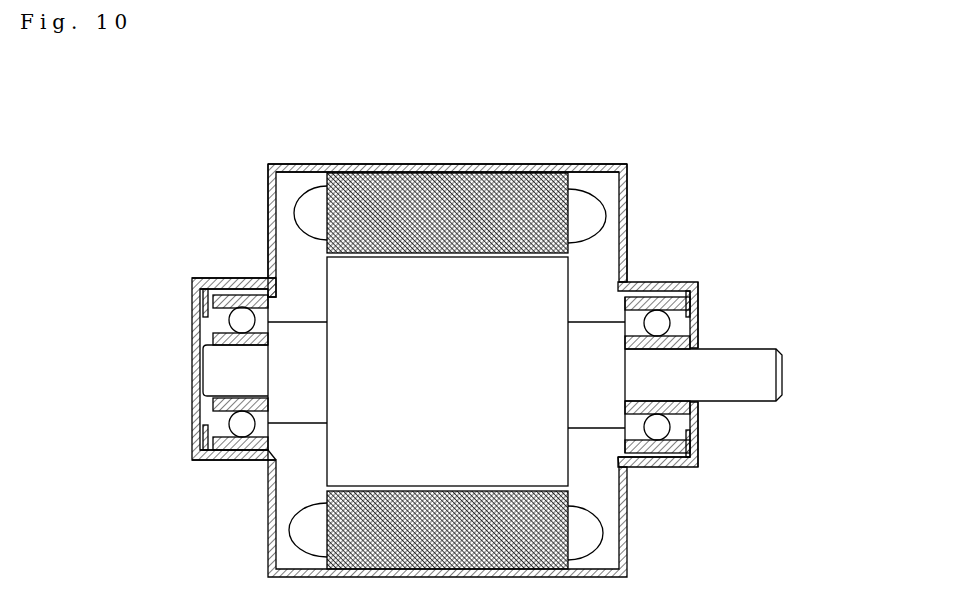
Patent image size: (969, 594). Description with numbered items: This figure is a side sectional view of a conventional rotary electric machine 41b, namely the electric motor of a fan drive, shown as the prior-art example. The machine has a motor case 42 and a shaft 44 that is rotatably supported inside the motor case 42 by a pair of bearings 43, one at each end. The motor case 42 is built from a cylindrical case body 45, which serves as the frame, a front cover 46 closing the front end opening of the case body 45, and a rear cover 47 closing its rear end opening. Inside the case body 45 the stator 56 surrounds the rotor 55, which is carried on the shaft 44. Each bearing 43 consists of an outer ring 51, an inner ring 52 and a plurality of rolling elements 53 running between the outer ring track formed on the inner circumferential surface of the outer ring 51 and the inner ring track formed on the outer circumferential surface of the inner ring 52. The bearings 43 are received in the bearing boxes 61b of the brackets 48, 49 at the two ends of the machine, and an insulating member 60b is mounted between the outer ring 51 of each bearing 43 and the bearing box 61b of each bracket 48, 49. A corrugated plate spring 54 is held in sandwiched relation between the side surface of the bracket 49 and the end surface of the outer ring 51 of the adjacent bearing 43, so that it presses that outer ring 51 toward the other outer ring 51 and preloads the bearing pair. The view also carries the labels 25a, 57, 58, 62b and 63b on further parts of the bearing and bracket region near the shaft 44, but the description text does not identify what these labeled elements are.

The bearing cap top wall 25a is at (233, 278).
The rotary electric machine 41b is at (591, 165).
The motor case 42 is at (507, 171).
The bearing 43 is at (212, 281).
The shaft 44 is at (748, 356).
The case body 45 is at (462, 170).
The front cover 46 is at (630, 190).
The rear cover 47 is at (268, 185).
The bracket 48 is at (697, 460).
The bracket 49 is at (252, 278).
The outer ring 51 is at (200, 297).
The inner ring 52 is at (268, 328).
The rolling elements 53 is at (235, 320).
The corrugated plate spring 54 is at (195, 448).
The rotor 55 is at (418, 270).
The stator 56 is at (370, 172).
The rotor shaft 57 is at (213, 375).
The shaft step 58 is at (268, 378).
The insulating member 60b is at (250, 462).
The bearing box 61b is at (215, 462).
The retaining ring 62b is at (203, 426).
The flange joint 63b is at (277, 445).